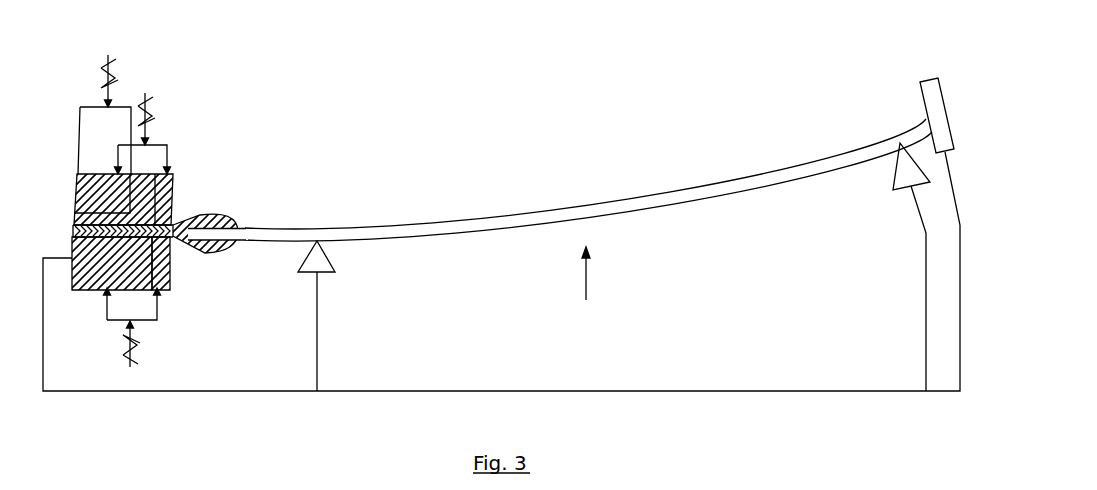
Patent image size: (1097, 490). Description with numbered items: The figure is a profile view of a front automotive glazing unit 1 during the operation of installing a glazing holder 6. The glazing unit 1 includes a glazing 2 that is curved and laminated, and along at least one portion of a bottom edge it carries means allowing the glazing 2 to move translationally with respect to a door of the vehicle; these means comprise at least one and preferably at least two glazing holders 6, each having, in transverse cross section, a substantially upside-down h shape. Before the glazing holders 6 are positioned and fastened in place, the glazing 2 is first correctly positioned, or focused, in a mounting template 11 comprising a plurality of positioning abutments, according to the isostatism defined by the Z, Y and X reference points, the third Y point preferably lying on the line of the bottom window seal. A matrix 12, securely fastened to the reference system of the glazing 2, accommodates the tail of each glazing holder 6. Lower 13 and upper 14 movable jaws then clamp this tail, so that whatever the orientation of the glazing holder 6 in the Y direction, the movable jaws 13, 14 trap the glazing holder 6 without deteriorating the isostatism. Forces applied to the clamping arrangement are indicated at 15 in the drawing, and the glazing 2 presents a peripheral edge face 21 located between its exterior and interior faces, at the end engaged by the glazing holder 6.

The glazing unit 1 is at (680, 118).
The glazing 2 is at (600, 208).
The glazing holder 6 is at (210, 222).
The mounting template 11 is at (928, 85).
The matrix 12 is at (95, 273).
The lower movable jaw 13 is at (167, 272).
The upper movable jaw 14 is at (173, 173).
The pressing element 15 is at (127, 118).
The peripheral edge face 21 is at (227, 213).